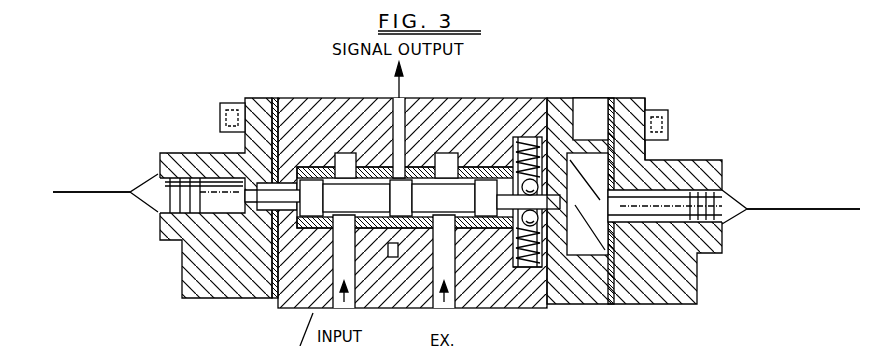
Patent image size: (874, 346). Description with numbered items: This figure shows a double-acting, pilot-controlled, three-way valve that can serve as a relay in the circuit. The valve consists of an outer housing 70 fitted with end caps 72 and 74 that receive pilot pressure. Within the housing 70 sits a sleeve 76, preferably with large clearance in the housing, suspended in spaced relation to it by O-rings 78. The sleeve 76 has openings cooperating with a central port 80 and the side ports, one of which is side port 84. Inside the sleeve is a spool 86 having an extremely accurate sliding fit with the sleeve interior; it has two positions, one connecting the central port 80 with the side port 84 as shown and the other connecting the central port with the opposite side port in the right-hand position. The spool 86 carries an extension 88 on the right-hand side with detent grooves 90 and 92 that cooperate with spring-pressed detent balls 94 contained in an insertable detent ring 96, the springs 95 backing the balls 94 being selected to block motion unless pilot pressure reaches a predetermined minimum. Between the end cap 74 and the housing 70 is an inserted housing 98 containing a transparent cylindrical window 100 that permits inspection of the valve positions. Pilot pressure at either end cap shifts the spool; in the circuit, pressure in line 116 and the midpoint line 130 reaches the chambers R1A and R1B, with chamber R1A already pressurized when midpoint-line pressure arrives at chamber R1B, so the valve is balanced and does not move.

The outer housing 70 is at (295, 107).
The end cap 72 is at (245, 145).
The end cap 74 is at (627, 162).
The sleeve 76 is at (300, 167).
The O-rings 78 is at (415, 176).
The central port 80 is at (396, 238).
The side port 84 is at (447, 268).
The spool 86 is at (322, 226).
The extension 88 is at (483, 228).
The detent groove 90 is at (513, 250).
The detent groove 92 is at (545, 202).
The detent balls 94 is at (542, 185).
The springs 95 is at (510, 172).
The detent ring 96 is at (515, 150).
The inserted housing 98 is at (567, 123).
The transparent cylindrical window 100 is at (573, 143).
The line 116 is at (797, 211).
The midpoint line 130 is at (72, 196).
The chamber R1A is at (700, 212).
The chamber R1B is at (217, 198).